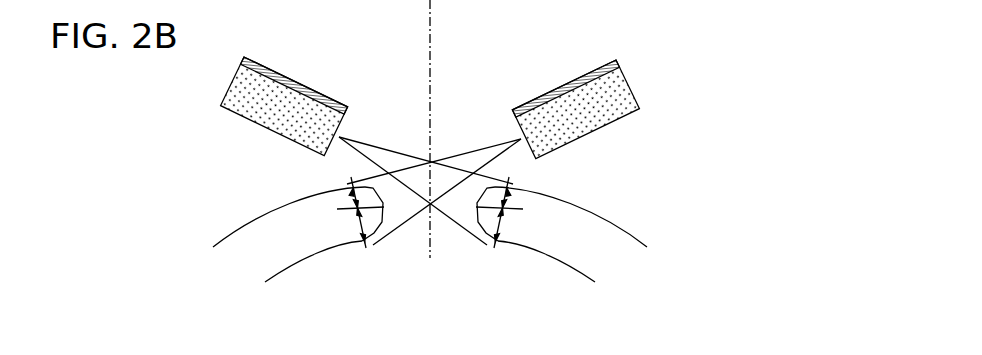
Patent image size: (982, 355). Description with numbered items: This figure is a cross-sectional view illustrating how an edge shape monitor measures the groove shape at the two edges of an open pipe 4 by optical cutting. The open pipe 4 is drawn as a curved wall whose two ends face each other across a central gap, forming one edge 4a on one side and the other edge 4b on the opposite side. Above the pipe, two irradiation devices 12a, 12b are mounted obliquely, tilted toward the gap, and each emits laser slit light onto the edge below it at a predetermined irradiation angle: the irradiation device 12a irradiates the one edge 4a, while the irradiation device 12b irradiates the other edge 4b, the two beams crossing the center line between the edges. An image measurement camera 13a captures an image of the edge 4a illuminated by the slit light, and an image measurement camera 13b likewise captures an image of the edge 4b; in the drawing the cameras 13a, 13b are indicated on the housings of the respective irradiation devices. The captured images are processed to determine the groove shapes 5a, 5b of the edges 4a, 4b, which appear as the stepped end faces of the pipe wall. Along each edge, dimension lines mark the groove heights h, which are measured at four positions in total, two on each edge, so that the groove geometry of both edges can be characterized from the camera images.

The open pipe 4 is at (248, 246).
The one edge of the open pipe 4a is at (383, 206).
The other edge of the open pipe 4b is at (477, 206).
The groove shape 5a is at (389, 226).
The groove shape 5b is at (471, 226).
The irradiation device 12a is at (577, 75).
The irradiation device 12b is at (283, 75).
The image measurement camera 13a is at (602, 128).
The image measurement camera 13b is at (258, 124).
The groove height h is at (431, 212).